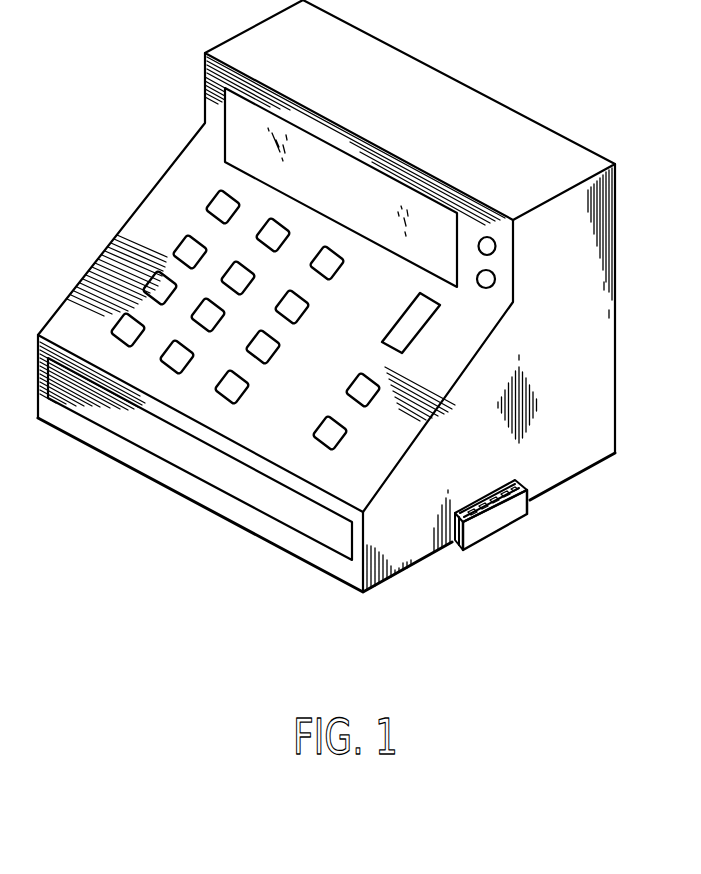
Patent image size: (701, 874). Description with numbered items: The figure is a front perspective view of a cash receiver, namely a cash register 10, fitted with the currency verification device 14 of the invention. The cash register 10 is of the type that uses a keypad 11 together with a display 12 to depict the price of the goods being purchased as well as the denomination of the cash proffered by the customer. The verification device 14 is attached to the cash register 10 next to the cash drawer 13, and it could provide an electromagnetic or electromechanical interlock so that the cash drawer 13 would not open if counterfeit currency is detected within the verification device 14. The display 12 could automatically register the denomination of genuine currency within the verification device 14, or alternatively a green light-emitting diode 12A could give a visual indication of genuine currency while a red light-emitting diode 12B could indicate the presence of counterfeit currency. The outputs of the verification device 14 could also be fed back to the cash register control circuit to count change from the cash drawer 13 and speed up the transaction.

The cash register 10 is at (473, 668).
The keypad 11 is at (176, 250).
The display 12 is at (335, 142).
The green light-emitting diode 12A is at (496, 243).
The red light-emitting diode 12B is at (496, 278).
The cash drawer 13 is at (302, 542).
The verification device 14 is at (530, 502).